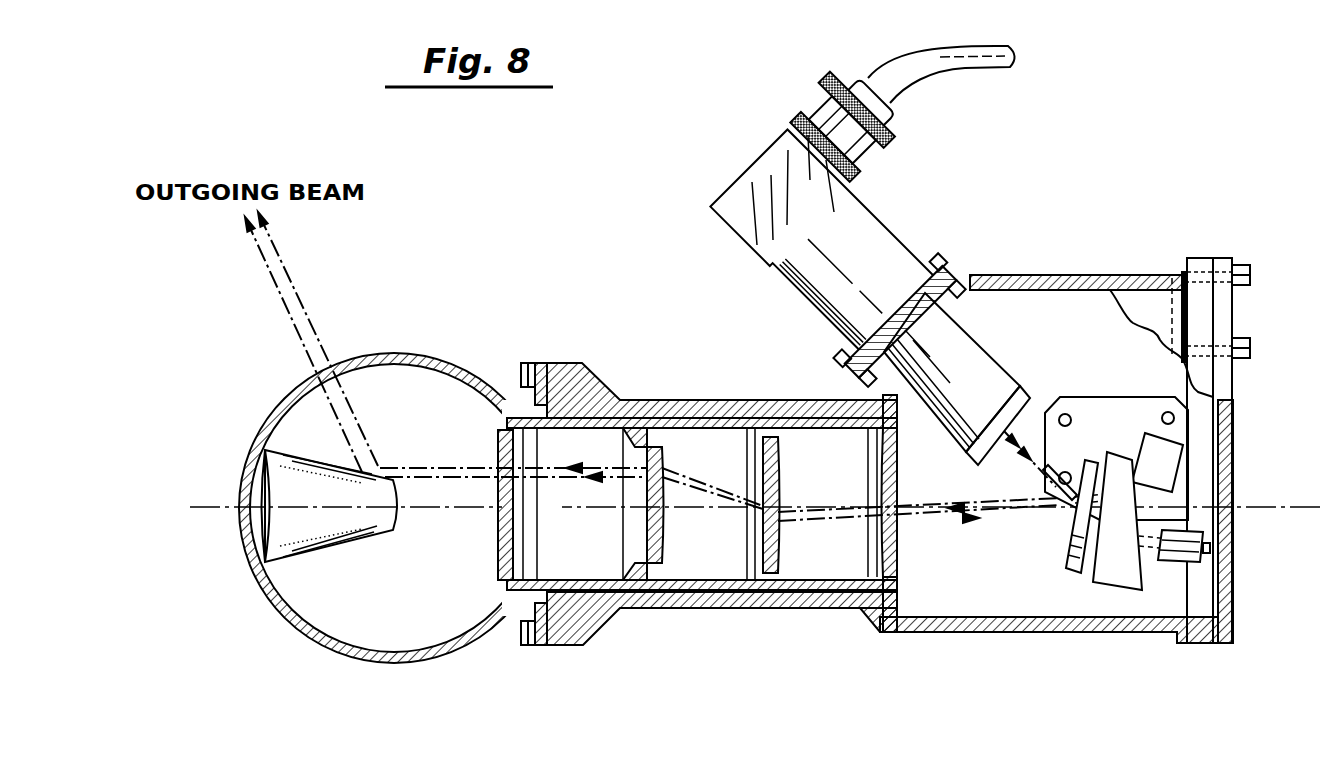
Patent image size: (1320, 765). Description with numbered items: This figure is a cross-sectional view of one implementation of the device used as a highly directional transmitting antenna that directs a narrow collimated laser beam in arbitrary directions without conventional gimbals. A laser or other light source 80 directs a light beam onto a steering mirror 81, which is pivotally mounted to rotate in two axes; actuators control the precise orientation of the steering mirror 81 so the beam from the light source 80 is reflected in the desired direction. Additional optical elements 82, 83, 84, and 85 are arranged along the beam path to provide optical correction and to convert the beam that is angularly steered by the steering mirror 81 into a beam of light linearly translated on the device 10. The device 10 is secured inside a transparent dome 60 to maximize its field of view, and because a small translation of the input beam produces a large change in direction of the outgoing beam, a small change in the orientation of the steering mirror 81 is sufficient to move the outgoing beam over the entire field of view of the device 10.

The device 10 is at (345, 549).
The transparent dome 60 is at (396, 355).
The light source 80 is at (890, 232).
The steering mirror 81 is at (1068, 578).
The optical element 82 is at (899, 536).
The optical element 83 is at (780, 529).
The optical element 84 is at (663, 523).
The optical element 85 is at (497, 533).